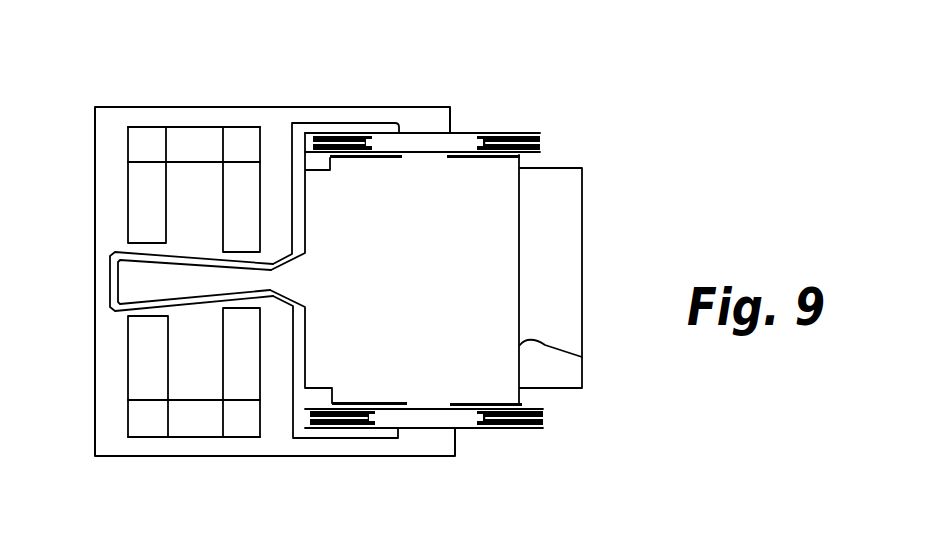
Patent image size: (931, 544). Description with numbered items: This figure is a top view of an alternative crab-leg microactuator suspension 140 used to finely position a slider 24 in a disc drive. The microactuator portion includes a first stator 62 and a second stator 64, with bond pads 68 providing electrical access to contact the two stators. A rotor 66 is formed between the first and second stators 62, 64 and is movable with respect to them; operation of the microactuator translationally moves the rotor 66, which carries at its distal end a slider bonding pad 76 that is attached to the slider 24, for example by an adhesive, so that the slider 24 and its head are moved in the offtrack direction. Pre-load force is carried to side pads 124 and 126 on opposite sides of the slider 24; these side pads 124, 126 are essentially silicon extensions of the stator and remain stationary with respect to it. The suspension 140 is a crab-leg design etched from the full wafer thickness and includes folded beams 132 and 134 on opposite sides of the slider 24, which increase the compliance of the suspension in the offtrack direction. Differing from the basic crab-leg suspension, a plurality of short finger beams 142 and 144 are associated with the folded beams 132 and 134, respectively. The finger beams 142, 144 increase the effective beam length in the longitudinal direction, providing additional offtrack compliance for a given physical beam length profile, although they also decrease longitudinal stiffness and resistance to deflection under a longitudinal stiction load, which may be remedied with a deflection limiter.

The crab-leg microactuator suspension 140 is at (300, 84).
The side pad 126 is at (452, 122).
The side pad 124 is at (457, 432).
The folded beam 134 is at (487, 132).
The folded beam 132 is at (493, 428).
The finger beam 144 is at (540, 137).
The finger beam 142 is at (543, 405).
The slider 24 is at (582, 267).
The slider bonding pad 76 is at (582, 357).
The rotor 66 is at (123, 275).
The bond pads 68 is at (142, 138).
The second stator 64 is at (187, 135).
The first stator 62 is at (188, 422).